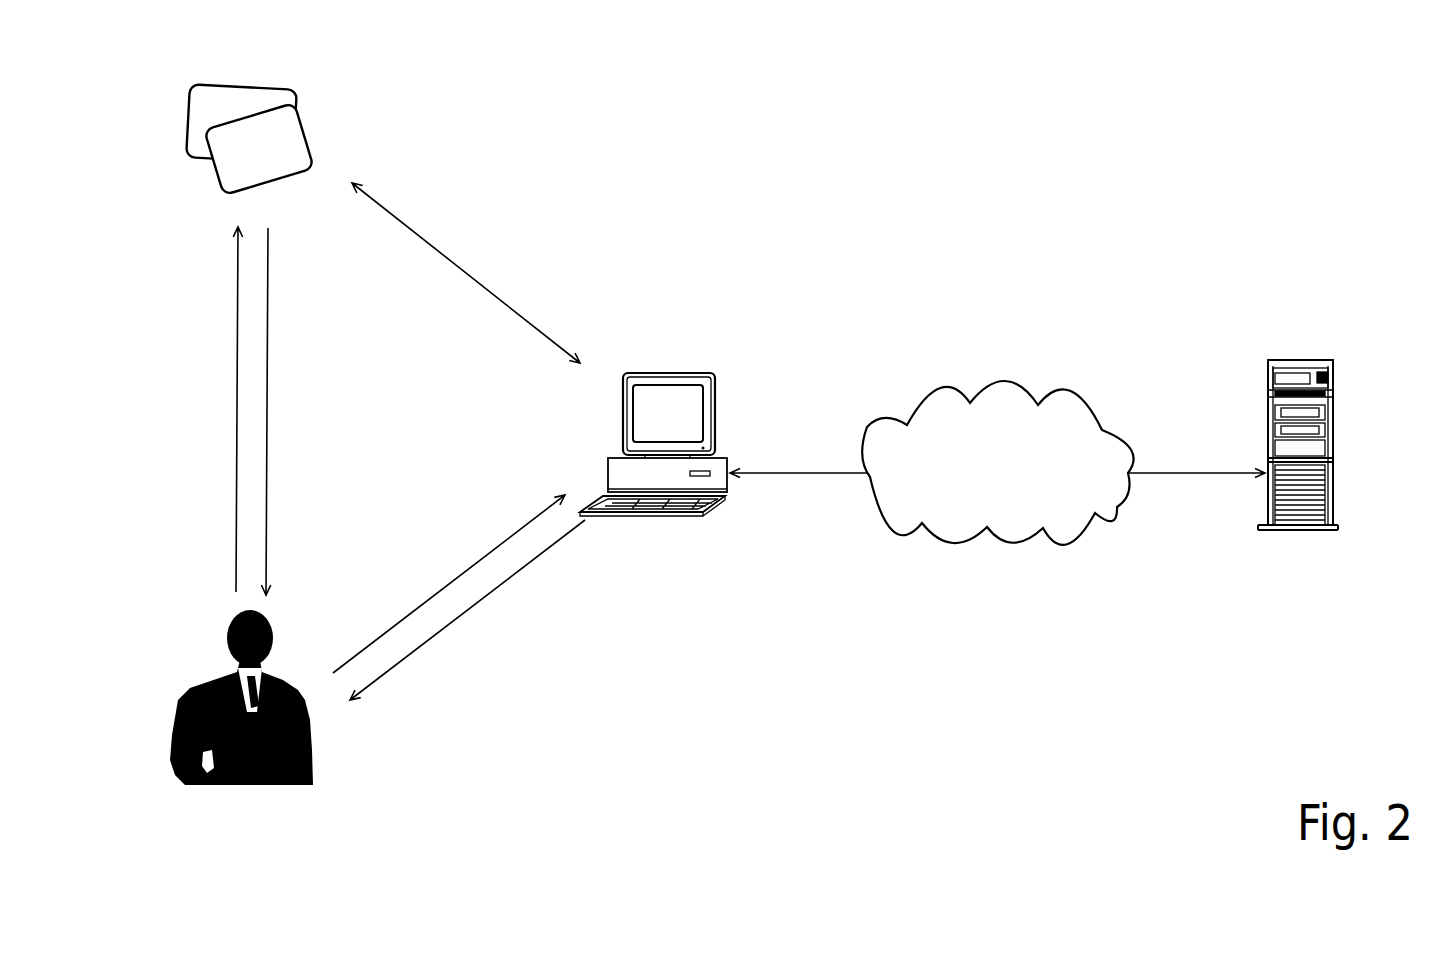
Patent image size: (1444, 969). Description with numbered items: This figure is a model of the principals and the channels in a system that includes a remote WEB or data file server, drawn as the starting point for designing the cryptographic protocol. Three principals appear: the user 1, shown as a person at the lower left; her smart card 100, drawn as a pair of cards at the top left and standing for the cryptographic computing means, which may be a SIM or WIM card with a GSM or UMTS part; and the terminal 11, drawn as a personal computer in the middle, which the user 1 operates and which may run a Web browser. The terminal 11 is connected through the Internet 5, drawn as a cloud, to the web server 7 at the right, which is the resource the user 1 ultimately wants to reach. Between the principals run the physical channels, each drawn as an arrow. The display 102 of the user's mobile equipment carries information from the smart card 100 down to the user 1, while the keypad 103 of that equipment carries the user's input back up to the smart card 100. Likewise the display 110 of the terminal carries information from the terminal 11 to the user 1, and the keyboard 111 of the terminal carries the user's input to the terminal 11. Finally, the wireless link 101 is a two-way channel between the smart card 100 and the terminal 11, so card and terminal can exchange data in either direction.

The user 1 is at (313, 753).
The Internet 5 is at (997, 463).
The web server 7 is at (1333, 425).
The terminal 11 is at (692, 405).
The smart card 100 is at (198, 130).
The wireless link 101 is at (466, 273).
The display of the user's equipment 102 is at (297, 411).
The keypad of the user's equipment 103 is at (206, 409).
The display of the terminal 110 is at (467, 610).
The keyboard of the terminal 111 is at (449, 584).